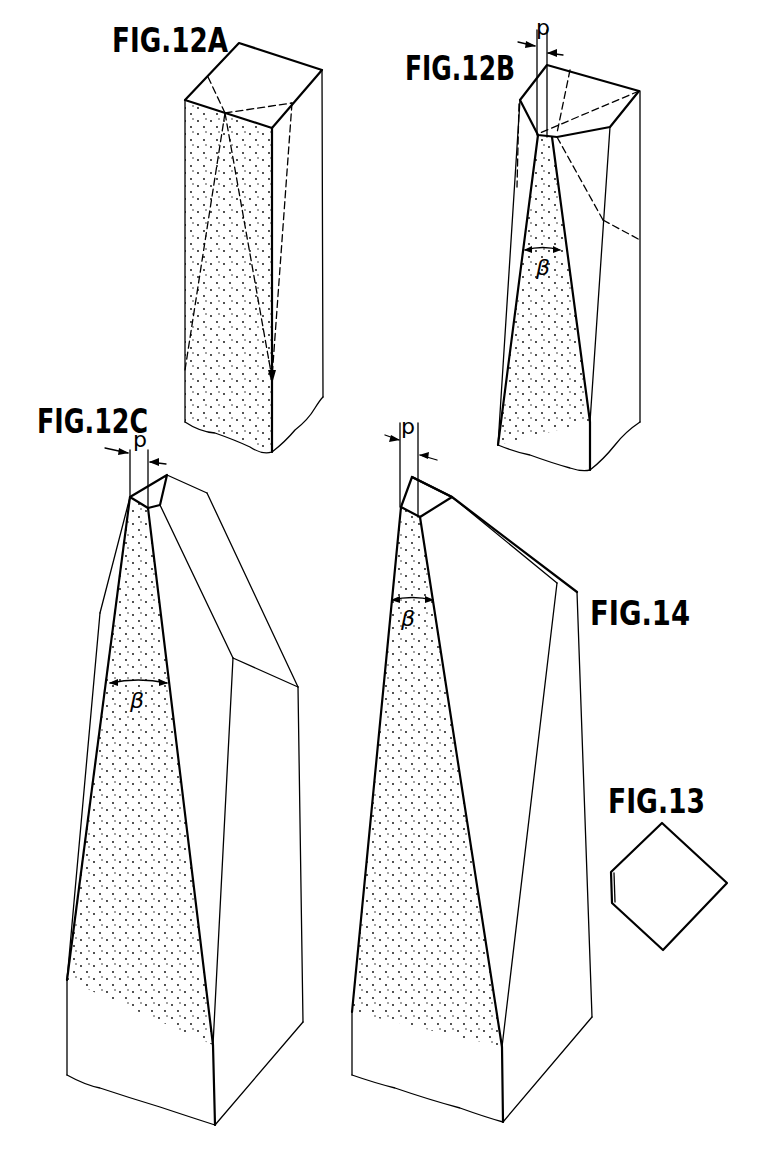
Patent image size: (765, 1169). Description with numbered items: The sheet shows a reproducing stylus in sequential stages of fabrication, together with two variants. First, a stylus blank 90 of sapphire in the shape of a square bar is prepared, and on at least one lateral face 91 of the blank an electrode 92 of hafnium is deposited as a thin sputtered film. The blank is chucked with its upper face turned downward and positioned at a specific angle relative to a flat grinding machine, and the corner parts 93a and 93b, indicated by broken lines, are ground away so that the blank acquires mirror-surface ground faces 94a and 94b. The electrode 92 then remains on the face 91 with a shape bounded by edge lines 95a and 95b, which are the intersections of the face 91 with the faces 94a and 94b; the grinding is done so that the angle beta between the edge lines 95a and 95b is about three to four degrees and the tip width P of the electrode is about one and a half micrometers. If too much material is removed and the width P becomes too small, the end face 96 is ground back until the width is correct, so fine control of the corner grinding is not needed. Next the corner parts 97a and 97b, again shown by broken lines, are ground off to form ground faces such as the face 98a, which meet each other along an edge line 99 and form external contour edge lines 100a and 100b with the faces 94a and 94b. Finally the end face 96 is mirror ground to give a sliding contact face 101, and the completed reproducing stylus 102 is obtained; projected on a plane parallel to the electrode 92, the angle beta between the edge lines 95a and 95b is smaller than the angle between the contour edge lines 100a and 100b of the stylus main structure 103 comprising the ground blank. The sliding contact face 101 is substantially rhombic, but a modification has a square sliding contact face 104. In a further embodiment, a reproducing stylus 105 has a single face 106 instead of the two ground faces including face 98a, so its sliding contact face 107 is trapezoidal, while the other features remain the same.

In FIG. 12A, the stylus blank 90 is at (315, 268).
In FIG. 12A, the lateral face 91 is at (198, 332).
In FIG. 12B, the lateral face 91 is at (518, 377).
In FIG. 12A, the electrode 92 is at (210, 232).
In FIG. 12B, the electrode 92 is at (528, 315).
In FIG. 12C, the electrode 92 is at (108, 808).
In FIG. 14, the electrode 92 is at (375, 783).
In FIG. 13, the electrode 92 is at (609, 893).
In FIG. 12A, the corner part 93a is at (285, 138).
In FIG. 12A, the corner part 93b is at (200, 102).
In FIG. 12B, the ground face 94a is at (593, 250).
In FIG. 12C, the ground face 94a is at (213, 630).
In FIG. 14, the ground face 94a is at (530, 573).
In FIG. 12B, the ground face 94b is at (517, 220).
In FIG. 12C, the ground face 94b is at (100, 633).
In FIG. 12B, the edge line 95a is at (572, 303).
In FIG. 12C, the edge line 95a is at (180, 750).
In FIG. 12B, the edge line 95b is at (517, 263).
In FIG. 12C, the edge line 95b is at (102, 720).
In FIG. 12B, the end face 96 is at (610, 108).
In FIG. 12B, the corner part 97a is at (623, 167).
In FIG. 12B, the corner part 97b is at (533, 127).
In FIG. 12C, the ground face 98a is at (230, 563).
In FIG. 12C, the edge line 99 is at (202, 490).
In FIG. 12C, the contour edge line 100a is at (183, 550).
In FIG. 12C, the contour edge line 100b is at (107, 582).
In FIG. 12C, the sliding contact face 101 is at (155, 488).
In FIG. 12C, the reproducing stylus 102 is at (70, 499).
In FIG. 12C, the stylus main structure 103 is at (290, 858).
In FIG. 14, the stylus main structure 103 is at (572, 677).
In FIG. 13, the sliding contact face 104 is at (682, 925).
In FIG. 14, the reproducing stylus 105 is at (522, 537).
In FIG. 14, the face 106 is at (478, 505).
In FIG. 14, the sliding contact face 107 is at (410, 490).